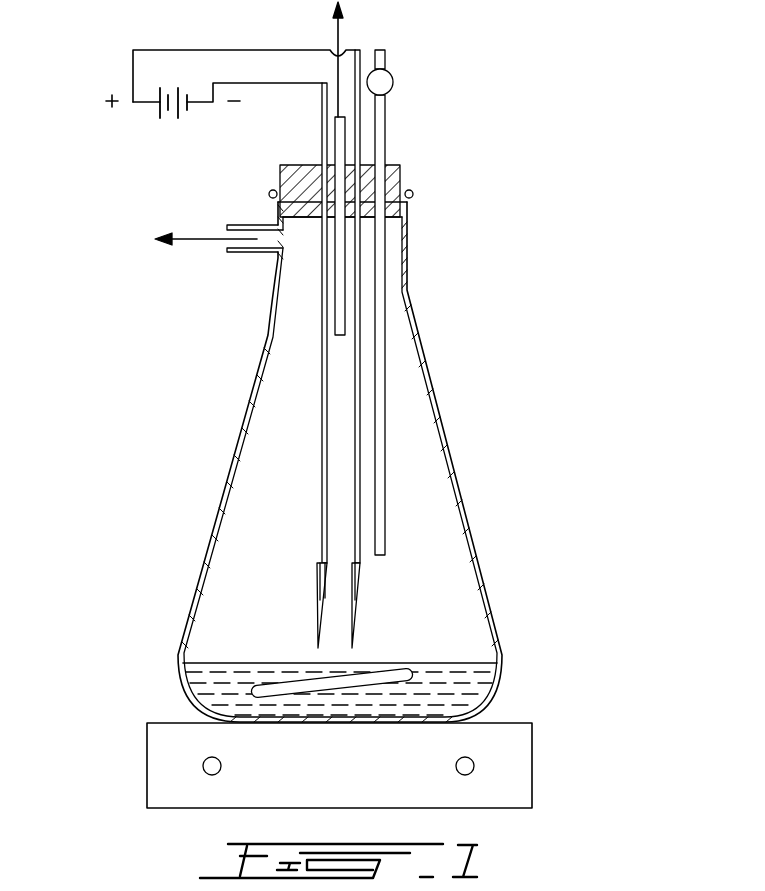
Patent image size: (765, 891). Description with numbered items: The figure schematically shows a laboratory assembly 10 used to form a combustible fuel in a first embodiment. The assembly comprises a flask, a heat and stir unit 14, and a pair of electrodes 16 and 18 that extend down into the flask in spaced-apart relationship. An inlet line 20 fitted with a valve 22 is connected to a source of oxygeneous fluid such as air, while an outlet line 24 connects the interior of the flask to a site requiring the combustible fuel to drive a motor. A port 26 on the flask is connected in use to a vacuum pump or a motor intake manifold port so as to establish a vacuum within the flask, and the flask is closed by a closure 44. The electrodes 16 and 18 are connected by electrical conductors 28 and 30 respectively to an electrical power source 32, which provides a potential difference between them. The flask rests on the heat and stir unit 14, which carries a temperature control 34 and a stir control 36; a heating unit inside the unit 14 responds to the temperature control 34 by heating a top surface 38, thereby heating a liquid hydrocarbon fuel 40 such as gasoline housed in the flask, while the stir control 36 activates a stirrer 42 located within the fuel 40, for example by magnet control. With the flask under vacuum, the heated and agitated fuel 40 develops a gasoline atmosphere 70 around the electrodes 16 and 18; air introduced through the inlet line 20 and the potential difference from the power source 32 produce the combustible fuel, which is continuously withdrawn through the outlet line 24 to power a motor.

The laboratory assembly 10 is at (578, 418).
The heat and stir unit 14 is at (533, 760).
The electrode 16 is at (323, 583).
The electrode 18 is at (363, 603).
The inlet line 20 is at (382, 130).
The valve 22 is at (393, 78).
The outlet line 24 is at (342, 137).
The port 26 is at (250, 252).
The electrical conductor 28 is at (322, 432).
The electrical conductor 30 is at (380, 423).
The electrical power source 32 is at (158, 113).
The temperature control 34 is at (207, 766).
The stir control 36 is at (468, 773).
The top surface 38 is at (512, 723).
The liquid hydrocarbon fuel 40 is at (443, 680).
The stirrer 42 is at (252, 693).
The closure 44 is at (410, 203).
The gasoline atmosphere 70 is at (269, 633).